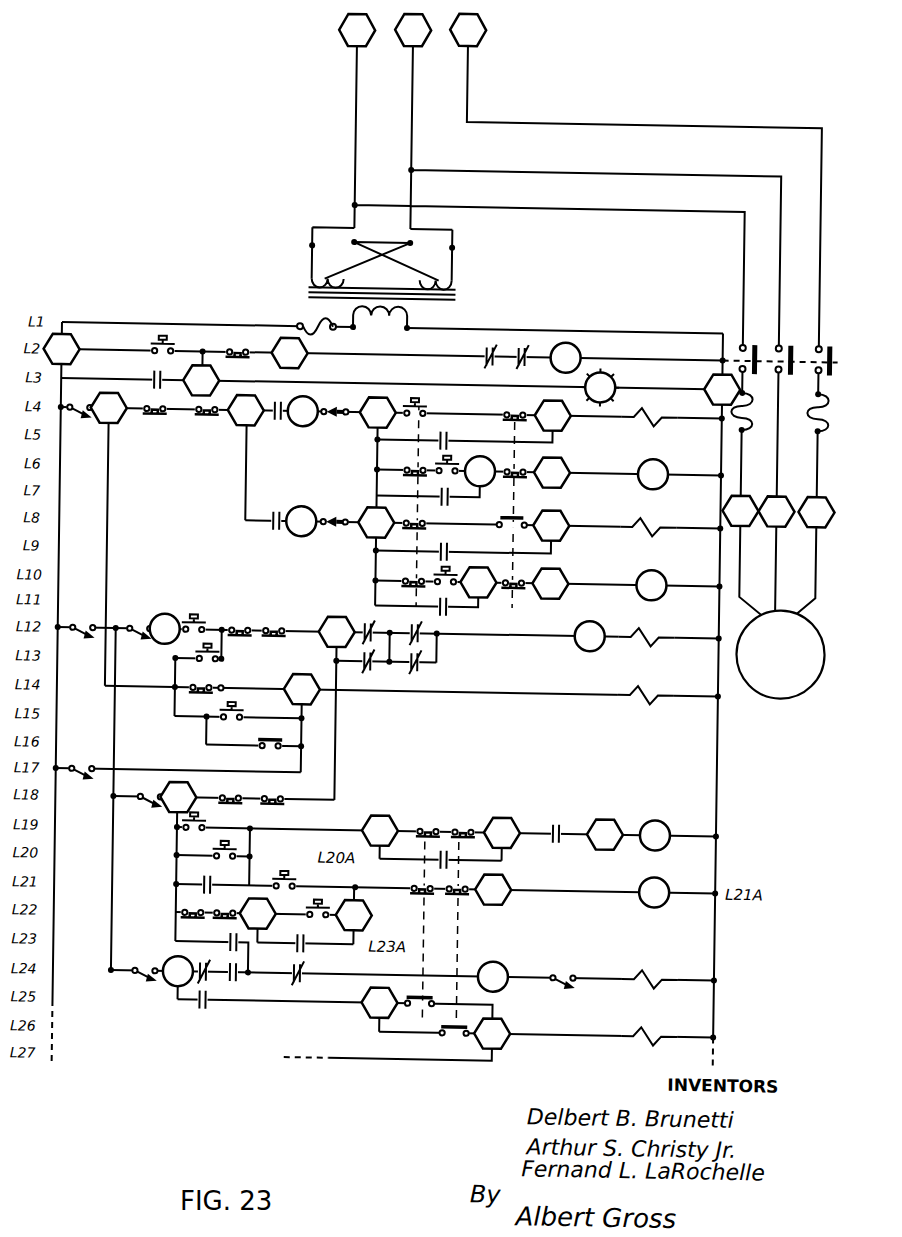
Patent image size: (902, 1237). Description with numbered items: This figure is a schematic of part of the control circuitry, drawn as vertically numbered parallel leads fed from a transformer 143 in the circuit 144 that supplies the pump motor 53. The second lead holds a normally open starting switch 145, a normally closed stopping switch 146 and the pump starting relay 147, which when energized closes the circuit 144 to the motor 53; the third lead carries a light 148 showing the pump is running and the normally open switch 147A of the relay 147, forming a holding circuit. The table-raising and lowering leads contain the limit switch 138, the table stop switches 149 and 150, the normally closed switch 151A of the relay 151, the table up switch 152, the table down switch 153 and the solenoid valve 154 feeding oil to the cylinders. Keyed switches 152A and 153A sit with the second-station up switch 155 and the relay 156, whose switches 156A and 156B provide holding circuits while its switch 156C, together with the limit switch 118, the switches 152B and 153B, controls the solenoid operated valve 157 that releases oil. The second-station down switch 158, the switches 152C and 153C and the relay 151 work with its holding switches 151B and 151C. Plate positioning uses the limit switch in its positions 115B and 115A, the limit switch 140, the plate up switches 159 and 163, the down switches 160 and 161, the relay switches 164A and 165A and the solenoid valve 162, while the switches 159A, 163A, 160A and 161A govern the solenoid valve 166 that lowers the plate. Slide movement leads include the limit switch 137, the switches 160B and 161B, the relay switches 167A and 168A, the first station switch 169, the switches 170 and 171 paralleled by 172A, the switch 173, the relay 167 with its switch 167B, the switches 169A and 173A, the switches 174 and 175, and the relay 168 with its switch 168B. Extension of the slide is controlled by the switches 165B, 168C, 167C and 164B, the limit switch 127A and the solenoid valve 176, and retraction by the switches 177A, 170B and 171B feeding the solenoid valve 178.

The pump motor 53 is at (780, 655).
The limit switch 118 is at (336, 508).
The limit switch (A position) 115A is at (88, 762).
The limit switch (B position) 115B is at (85, 620).
The limit switch (A position) 127A is at (572, 960).
The limit switch 137 is at (155, 805).
The limit switch 138 is at (90, 418).
The limit switch 140 is at (140, 620).
The transformer 143 is at (470, 256).
The circuit 144 is at (540, 113).
The starting switch 145 is at (168, 337).
The stopping switch 146 is at (239, 342).
The pump starting relay 147 is at (572, 336).
The normally open switch of starting relay 147A is at (157, 366).
The light 148 is at (607, 360).
The table stop switch 149 is at (156, 416).
The table stop switch 150 is at (208, 416).
The relay 151 is at (670, 566).
The normally closed switch of relay 151 151A is at (336, 398).
The normally open switch of relay 151 151B is at (452, 545).
The normally open switch of relay 151 151C is at (452, 603).
The table up switch 152 is at (416, 392).
The normally closed switch 152A is at (405, 466).
The normally closed switch 152B is at (405, 520).
The normally closed switch 152C is at (405, 577).
The table down switch 153 is at (510, 402).
The normally closed switch 153A is at (530, 468).
The normally open switch 153B is at (530, 520).
The normally closed switch 153C is at (530, 574).
The solenoid valve 154 is at (640, 412).
The table up switch 155 is at (460, 461).
The relay 156 is at (668, 455).
The normally open switch of relay 156 156A is at (451, 434).
The normally open switch of relay 156 156B is at (505, 511).
The normally closed switch of relay 156 156C is at (276, 528).
The solenoid operated valve 157 is at (660, 508).
The down switch 158 is at (462, 580).
The plate up switch 159 is at (196, 612).
The normally closed switch 159A is at (198, 690).
The plate down switch 160 is at (244, 618).
The normally open switch 160A is at (300, 670).
The normally closed switch 160B is at (233, 790).
The plate down switch 161 is at (278, 618).
The switch 161A is at (300, 745).
The normally closed down switch 161B is at (290, 795).
The solenoid valve 162 is at (664, 620).
The up switch 163 is at (200, 660).
The normally closed switch 163A is at (230, 710).
The normally closed switch of relay 164 164A is at (378, 662).
The normally closed switch of relay 164 164B is at (309, 972).
The normally closed switch of relay 165 165A is at (430, 632).
The normally closed switch of relay 165 165B is at (210, 985).
The solenoid valve 166 is at (650, 695).
The relay 167 is at (665, 810).
The normally closed switch of relay 167 167A is at (375, 668).
The normally open switch of relay 167 167B is at (210, 888).
The normally open switch of relay 167 167C is at (244, 952).
The relay 168 is at (670, 870).
The normally closed switch of relay 168 168A is at (430, 660).
The normally open switch of relay 168 168B is at (320, 944).
The normally open switch of relay 168 168C is at (244, 981).
The first station switch 169 is at (200, 830).
The normally closed switch 169A is at (200, 915).
The normally closed switch 170 is at (435, 815).
The normally open switch 170B is at (426, 1008).
The normally closed switch 171 is at (470, 815).
The normally open switch 171B is at (462, 1036).
The normally closed switch 172A is at (458, 853).
The switch 173 is at (240, 847).
The normally closed switch 173A is at (230, 915).
The switch 174 is at (290, 874).
The switch 175 is at (335, 903).
The solenoid valve 176 is at (645, 968).
The normally open switch of relay 177 177A is at (212, 1010).
The solenoid valve 178 is at (648, 1038).